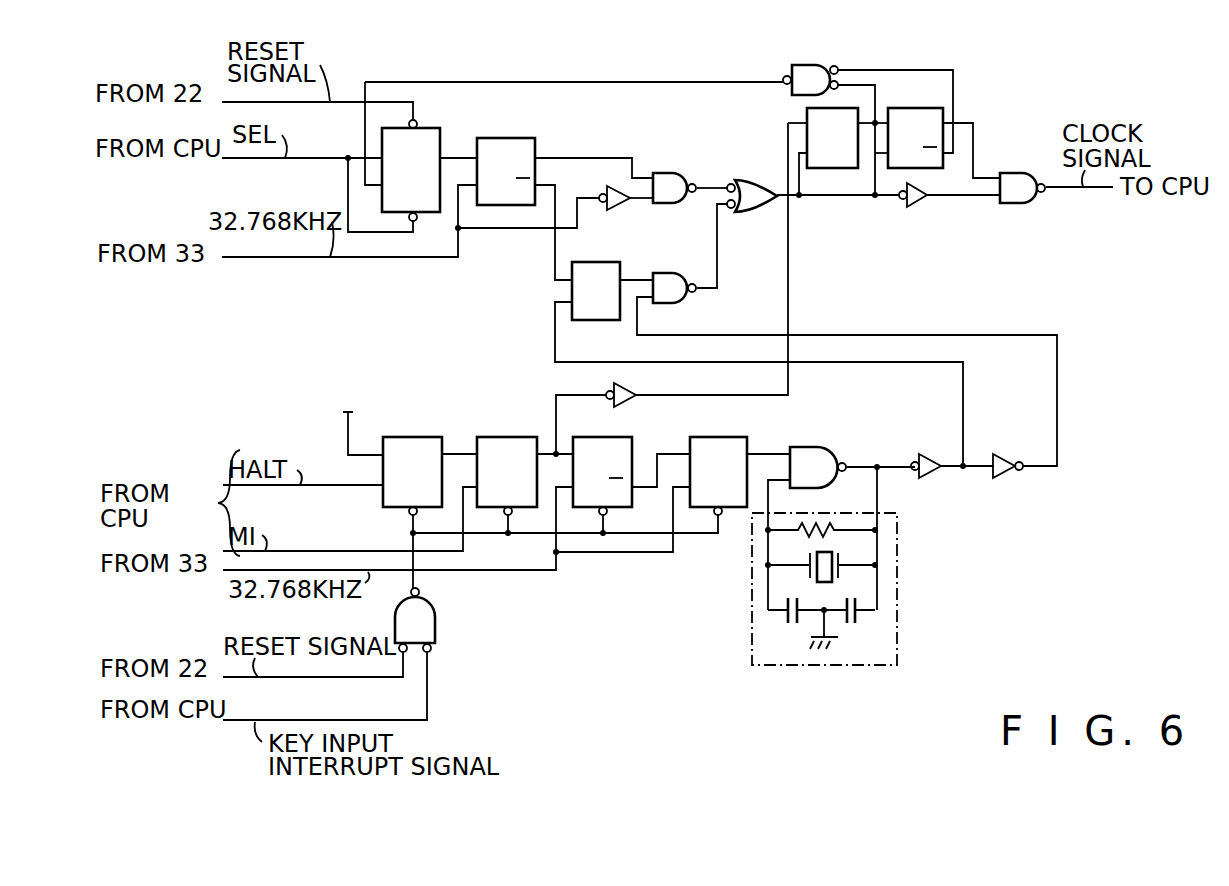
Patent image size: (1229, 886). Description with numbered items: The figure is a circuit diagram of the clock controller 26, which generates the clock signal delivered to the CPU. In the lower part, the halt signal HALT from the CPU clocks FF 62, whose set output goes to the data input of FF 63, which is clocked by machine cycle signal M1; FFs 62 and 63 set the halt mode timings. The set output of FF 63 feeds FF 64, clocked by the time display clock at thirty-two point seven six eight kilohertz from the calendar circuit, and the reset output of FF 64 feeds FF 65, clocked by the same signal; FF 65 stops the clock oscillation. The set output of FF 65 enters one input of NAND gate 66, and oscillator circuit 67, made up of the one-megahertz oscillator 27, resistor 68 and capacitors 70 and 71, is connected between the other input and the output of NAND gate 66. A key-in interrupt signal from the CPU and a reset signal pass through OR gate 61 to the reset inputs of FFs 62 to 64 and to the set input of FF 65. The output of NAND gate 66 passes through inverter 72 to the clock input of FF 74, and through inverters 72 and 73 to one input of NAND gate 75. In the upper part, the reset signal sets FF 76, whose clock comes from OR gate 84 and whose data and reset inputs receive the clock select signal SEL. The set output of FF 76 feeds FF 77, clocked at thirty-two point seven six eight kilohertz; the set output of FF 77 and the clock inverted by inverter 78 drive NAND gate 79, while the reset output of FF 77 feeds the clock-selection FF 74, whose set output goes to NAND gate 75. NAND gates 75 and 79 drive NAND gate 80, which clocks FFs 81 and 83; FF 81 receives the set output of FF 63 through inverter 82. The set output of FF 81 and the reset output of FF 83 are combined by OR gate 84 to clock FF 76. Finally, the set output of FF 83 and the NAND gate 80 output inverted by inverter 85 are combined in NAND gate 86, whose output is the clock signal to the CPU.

The clock controller 26 is at (720, 69).
The oscillator 27 is at (848, 572).
The OR gate 61 is at (440, 622).
The FF 62 is at (416, 437).
The FF 63 is at (510, 437).
The FF 64 is at (624, 437).
The FF 65 is at (718, 437).
The NAND gate 66 is at (816, 447).
The oscillator circuit 67 is at (890, 608).
The resistor 68 is at (850, 536).
The capacitor 70 is at (782, 622).
The capacitor 71 is at (855, 628).
The inverter 72 is at (926, 454).
The inverter 73 is at (1006, 454).
The FF 74 is at (590, 320).
The NAND gate 75 is at (688, 303).
The FF 76 is at (438, 128).
The FF 77 is at (516, 138).
The inverter 78 is at (622, 205).
The NAND gate 79 is at (672, 173).
The NAND gate 80 is at (752, 180).
The FF 81 is at (843, 168).
The inverter 82 is at (636, 388).
The FF 83 is at (903, 108).
The OR gate 84 is at (818, 65).
The inverter 85 is at (920, 200).
The NAND gate 86 is at (1022, 173).